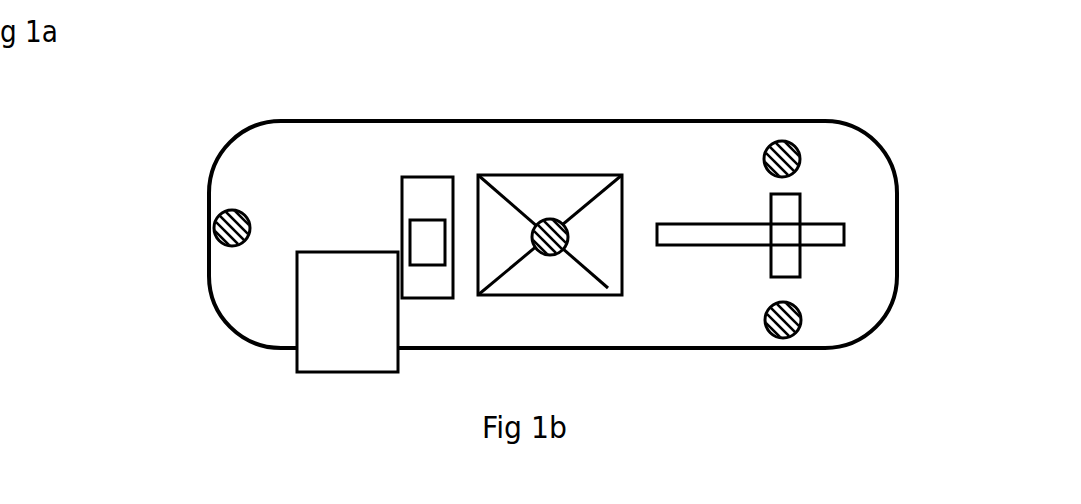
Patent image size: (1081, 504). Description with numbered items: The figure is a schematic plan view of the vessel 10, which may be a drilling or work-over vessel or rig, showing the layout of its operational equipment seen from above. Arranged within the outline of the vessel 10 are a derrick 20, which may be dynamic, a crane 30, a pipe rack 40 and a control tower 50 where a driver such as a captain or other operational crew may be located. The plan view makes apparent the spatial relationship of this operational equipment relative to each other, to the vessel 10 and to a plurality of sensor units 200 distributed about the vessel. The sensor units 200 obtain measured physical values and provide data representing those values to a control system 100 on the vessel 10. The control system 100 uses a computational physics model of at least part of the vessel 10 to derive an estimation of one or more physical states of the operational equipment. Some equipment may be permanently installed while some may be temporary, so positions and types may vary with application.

The vessel 10 is at (903, 141).
The derrick 20 is at (548, 190).
The crane 30 is at (786, 208).
The pipe rack 40 is at (347, 373).
The control tower 50 is at (418, 207).
The control system 100 is at (428, 238).
The sensor units 200 is at (223, 217).